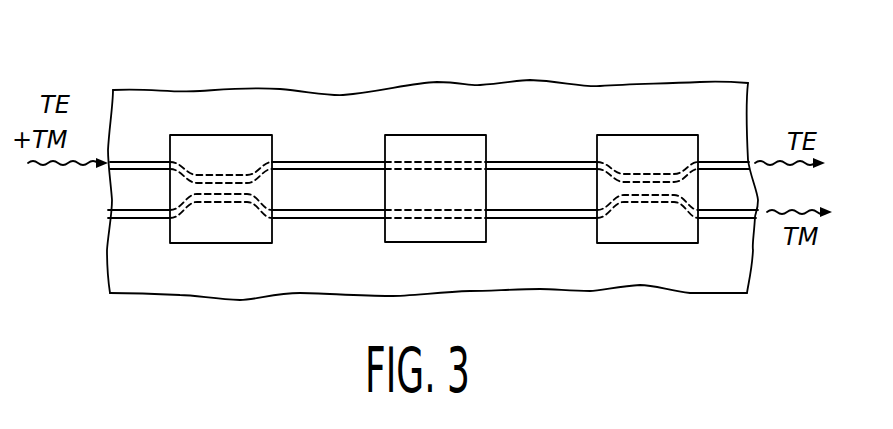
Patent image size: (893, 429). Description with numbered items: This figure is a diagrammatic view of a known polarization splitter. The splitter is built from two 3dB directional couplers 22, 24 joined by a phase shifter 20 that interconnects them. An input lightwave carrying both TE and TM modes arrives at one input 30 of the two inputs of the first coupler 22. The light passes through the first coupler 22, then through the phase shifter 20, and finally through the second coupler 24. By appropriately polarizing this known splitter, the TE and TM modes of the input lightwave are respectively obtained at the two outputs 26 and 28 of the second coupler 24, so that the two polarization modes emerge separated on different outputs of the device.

The phase shifter 20 is at (445, 143).
The 3dB directional coupler 22 is at (242, 143).
The 3dB directional coupler 24 is at (642, 145).
The output 26 is at (726, 162).
The output 28 is at (730, 213).
The input 30 is at (139, 163).